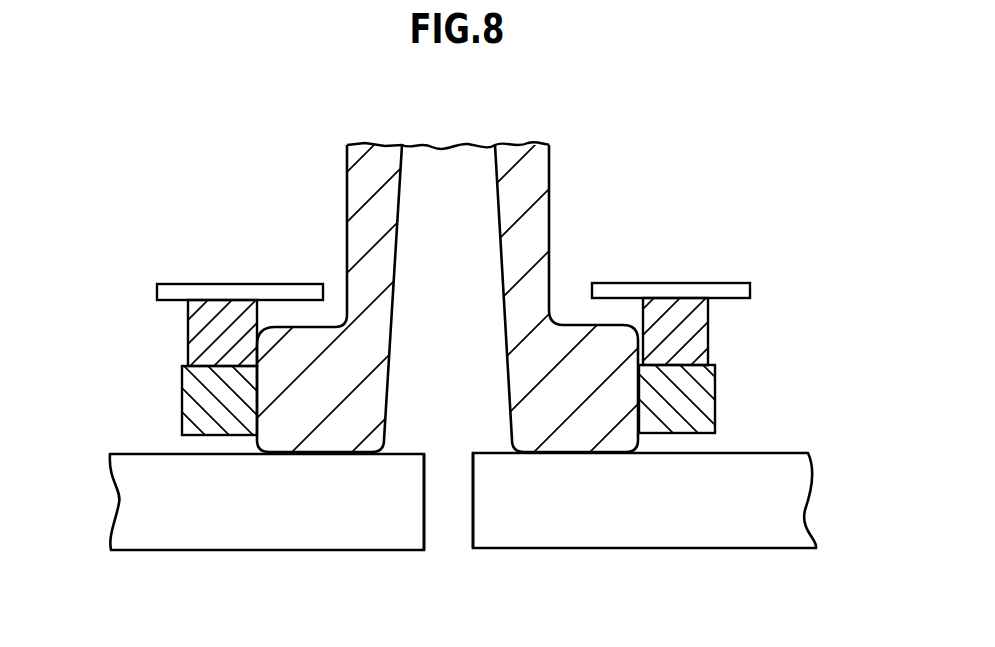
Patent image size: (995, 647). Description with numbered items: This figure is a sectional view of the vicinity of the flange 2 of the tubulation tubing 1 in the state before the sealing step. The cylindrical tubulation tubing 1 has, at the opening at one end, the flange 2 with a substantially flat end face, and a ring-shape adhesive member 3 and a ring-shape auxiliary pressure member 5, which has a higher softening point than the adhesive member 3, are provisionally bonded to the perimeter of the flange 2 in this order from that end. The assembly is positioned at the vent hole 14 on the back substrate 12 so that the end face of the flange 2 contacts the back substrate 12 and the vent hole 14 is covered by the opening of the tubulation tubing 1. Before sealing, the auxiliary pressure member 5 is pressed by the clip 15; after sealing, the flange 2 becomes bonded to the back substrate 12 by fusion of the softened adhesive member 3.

The tubulation tubing 1 is at (528, 162).
The flange 2 is at (592, 425).
The adhesive member 3 is at (698, 397).
The auxiliary pressure member 5 is at (693, 327).
The back substrate 12 is at (787, 450).
The vent hole 14 is at (470, 483).
The clip 15 is at (713, 285).